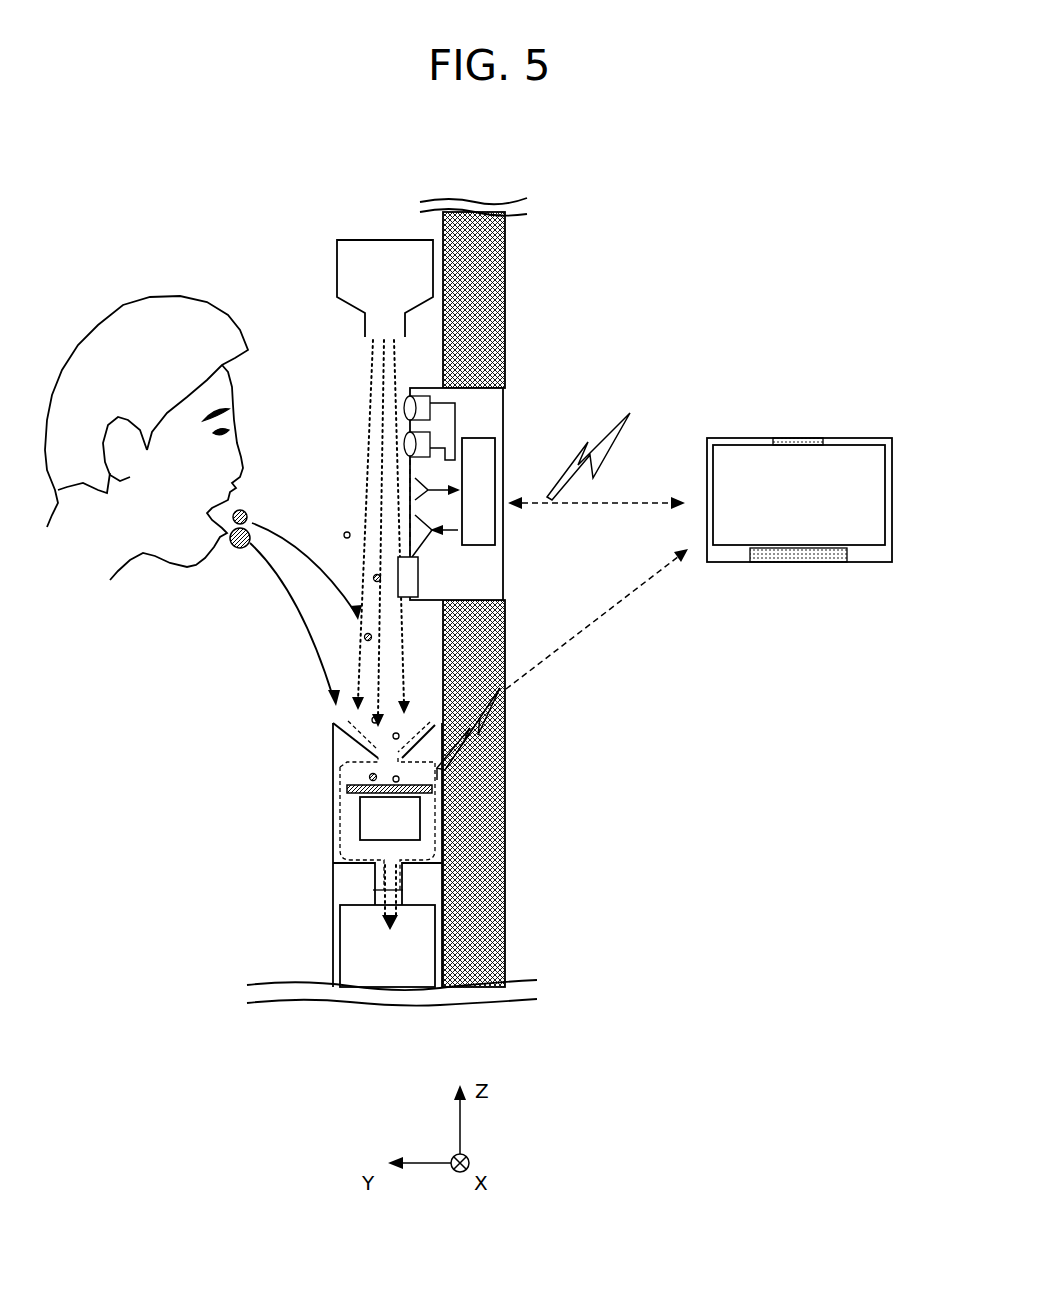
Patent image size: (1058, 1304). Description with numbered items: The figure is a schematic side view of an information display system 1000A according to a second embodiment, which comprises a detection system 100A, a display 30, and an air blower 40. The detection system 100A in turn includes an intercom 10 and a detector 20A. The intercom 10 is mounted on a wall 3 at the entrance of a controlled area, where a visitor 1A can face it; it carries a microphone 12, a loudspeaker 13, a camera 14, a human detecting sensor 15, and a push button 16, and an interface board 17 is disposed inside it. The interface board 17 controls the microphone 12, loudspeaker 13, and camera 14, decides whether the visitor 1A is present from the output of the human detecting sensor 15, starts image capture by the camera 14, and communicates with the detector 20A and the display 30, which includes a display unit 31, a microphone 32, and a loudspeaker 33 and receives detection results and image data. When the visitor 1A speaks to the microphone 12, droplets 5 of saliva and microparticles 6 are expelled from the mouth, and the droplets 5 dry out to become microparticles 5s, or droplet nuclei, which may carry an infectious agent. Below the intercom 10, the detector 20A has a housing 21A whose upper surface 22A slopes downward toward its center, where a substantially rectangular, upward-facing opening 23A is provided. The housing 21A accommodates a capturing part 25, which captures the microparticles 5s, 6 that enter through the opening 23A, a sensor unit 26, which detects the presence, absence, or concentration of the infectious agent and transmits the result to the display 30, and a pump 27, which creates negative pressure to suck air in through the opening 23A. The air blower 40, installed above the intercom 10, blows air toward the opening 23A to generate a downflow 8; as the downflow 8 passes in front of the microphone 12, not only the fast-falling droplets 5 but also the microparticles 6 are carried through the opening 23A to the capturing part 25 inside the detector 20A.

The visitor 1A is at (150, 297).
The wall 3 is at (440, 232).
The droplets 5 is at (233, 547).
The microparticles 5s is at (364, 637).
The microparticles 6 is at (377, 574).
The downflow 8 is at (380, 404).
The intercom 10 is at (560, 330).
The microphone 12 is at (433, 472).
The loudspeaker 13 is at (437, 553).
The camera 14 is at (420, 440).
The human detecting sensor 15 is at (425, 402).
The push button 16 is at (410, 585).
The interface board 17 is at (477, 496).
The detector 20A is at (377, 809).
The housing 21A is at (333, 730).
The upper surface 22A is at (434, 725).
The opening 23A is at (405, 812).
The capturing part 25 is at (347, 787).
The sensor unit 26 is at (360, 825).
The pump 27 is at (340, 935).
The display 30 is at (831, 500).
The display unit 31 is at (875, 490).
The microphone 32 is at (797, 438).
The loudspeaker 33 is at (797, 562).
The air blower 40 is at (352, 240).
The detection system 100A is at (647, 268).
The information display system 1000A is at (817, 168).